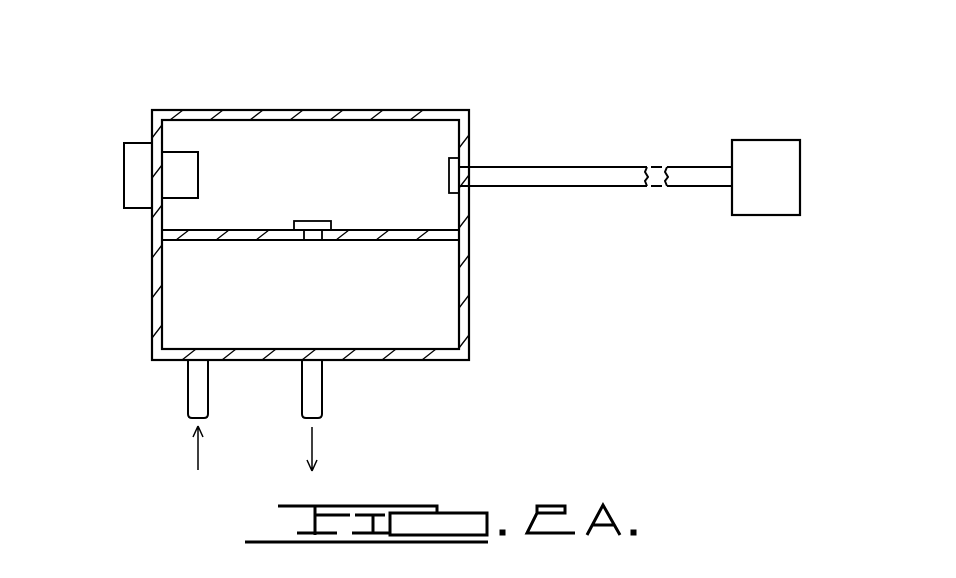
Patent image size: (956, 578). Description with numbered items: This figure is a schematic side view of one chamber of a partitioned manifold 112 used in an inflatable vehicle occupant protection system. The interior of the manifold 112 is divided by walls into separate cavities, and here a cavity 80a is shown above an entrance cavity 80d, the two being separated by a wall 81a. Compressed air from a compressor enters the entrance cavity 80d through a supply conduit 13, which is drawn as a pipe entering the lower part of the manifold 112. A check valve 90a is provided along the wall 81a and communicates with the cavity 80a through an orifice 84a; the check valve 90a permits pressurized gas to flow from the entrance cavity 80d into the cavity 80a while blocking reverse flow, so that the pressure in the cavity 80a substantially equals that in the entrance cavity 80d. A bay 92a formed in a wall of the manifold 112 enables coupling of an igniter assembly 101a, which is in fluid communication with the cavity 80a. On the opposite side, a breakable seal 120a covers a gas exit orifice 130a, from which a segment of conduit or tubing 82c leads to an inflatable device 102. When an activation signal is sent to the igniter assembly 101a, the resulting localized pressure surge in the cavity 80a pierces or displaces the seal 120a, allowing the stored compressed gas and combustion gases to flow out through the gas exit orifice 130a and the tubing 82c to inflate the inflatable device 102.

The manifold 112 is at (257, 98).
The bay 92a is at (131, 172).
The igniter assembly 101a is at (182, 173).
The wall 81a is at (207, 242).
The check valve 90a is at (307, 222).
The orifice 84a is at (314, 242).
The cavity 80a is at (422, 219).
The entrance cavity 80d is at (262, 339).
The gas exit orifice 130a is at (464, 172).
The breakable seal 120a is at (453, 190).
The conduit or tubing 82c is at (610, 180).
The inflatable device 102 is at (762, 204).
The supply conduit 13 is at (194, 388).